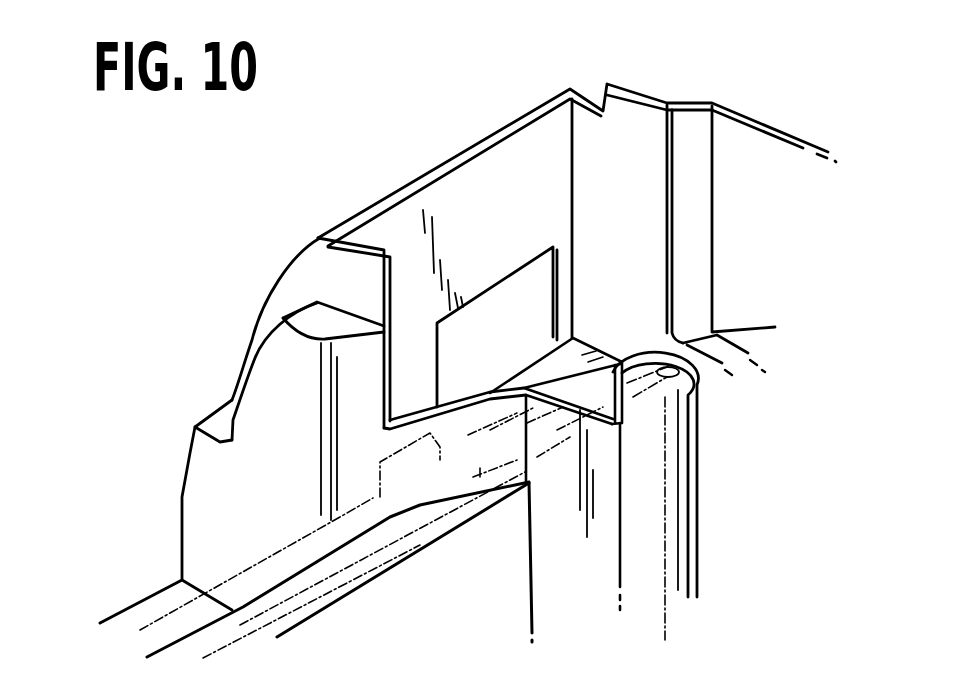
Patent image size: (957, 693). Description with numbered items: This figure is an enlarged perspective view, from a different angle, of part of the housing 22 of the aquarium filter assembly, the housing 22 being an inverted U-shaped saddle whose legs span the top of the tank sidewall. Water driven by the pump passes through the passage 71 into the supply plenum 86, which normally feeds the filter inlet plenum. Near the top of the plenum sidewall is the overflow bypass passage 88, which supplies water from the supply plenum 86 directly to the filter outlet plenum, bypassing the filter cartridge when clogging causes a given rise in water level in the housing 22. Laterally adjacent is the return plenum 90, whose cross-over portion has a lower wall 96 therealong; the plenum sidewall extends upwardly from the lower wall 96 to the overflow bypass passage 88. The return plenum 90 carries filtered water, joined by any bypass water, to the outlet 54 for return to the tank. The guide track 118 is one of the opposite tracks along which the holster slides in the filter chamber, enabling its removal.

The housing 22 is at (773, 128).
The passage 71 is at (513, 313).
The overflow bypass passage 88 is at (562, 370).
The supply plenum 86 is at (612, 343).
The guide track 118 is at (745, 333).
The lower wall 96 is at (430, 535).
The outlet 54 is at (238, 614).
The return plenum 90 is at (240, 612).